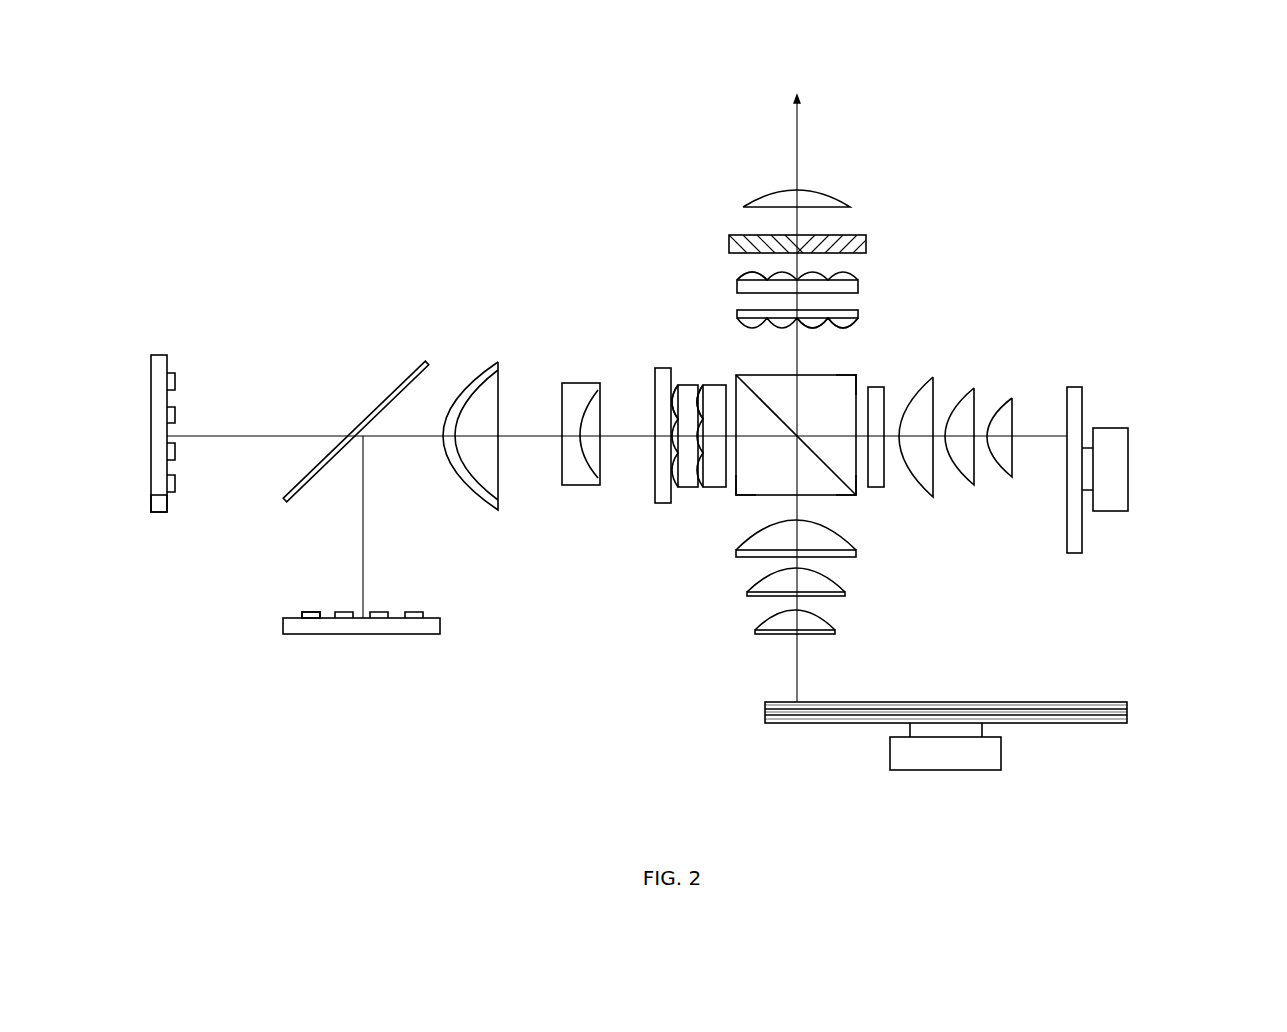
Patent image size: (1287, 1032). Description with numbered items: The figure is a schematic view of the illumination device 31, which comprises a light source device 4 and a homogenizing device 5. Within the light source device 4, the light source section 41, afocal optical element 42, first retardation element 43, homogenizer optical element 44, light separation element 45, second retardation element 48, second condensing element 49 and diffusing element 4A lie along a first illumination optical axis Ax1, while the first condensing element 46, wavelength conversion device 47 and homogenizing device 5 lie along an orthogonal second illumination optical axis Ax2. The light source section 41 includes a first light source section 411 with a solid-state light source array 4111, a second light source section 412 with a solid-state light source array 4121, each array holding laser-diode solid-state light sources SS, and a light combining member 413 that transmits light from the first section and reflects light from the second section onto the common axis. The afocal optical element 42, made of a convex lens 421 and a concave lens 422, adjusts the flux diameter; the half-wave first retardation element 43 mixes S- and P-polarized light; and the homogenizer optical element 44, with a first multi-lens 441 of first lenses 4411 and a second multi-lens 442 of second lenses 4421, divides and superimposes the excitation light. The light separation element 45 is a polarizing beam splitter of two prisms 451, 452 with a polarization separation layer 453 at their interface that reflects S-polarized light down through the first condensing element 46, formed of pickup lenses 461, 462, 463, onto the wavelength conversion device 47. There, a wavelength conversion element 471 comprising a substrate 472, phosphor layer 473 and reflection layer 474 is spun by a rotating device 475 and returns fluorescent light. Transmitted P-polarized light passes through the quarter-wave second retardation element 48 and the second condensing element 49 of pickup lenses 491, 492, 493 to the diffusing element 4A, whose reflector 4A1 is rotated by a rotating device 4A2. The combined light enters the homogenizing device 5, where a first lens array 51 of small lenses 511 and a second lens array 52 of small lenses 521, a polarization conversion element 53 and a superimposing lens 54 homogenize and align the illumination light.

The illumination device 31 is at (1072, 116).
The light source device 4 is at (199, 236).
The light source section 41 is at (222, 714).
The first light source section 411 is at (159, 355).
The solid-state light source array 4111 is at (159, 513).
The second light source section 412 is at (440, 628).
The solid-state light source array 4121 is at (283, 628).
The light combining member 413 is at (413, 370).
The afocal optical element 42 is at (521, 490).
The lens 421 is at (480, 512).
The lens 422 is at (583, 486).
The first retardation element 43 is at (660, 368).
The homogenizer optical element 44 is at (673, 446).
The first multi-lens 441 is at (688, 487).
The second multi-lens 442 is at (716, 487).
The first lens 4411 is at (684, 386).
The second lens 4421 is at (710, 386).
The light separation element 45 is at (838, 497).
The prism 451 is at (745, 497).
The prism 452 is at (856, 375).
The polarization separation layer 453 is at (856, 488).
The first condensing element 46 is at (798, 588).
The pickup lens 461 is at (858, 553).
The pickup lens 462 is at (846, 594).
The pickup lens 463 is at (836, 632).
The wavelength conversion device 47 is at (1013, 757).
The wavelength conversion element 471 is at (1209, 670).
The substrate 472 is at (1127, 719).
The phosphor layer 473 is at (1127, 705).
The reflection layer 474 is at (1127, 712).
The rotating device 475 is at (1001, 760).
The second retardation element 48 is at (877, 387).
The second condensing element 49 is at (962, 416).
The pickup lens 491 is at (925, 380).
The pickup lens 492 is at (968, 487).
The pickup lens 493 is at (1008, 398).
The diffusing element 4A is at (1099, 422).
The reflector 4A1 is at (1074, 387).
The rotating device 4A2 is at (1112, 428).
The homogenizing device 5 is at (827, 271).
The first lens array 51 is at (858, 314).
The small lens 511 is at (862, 328).
The second lens array 52 is at (858, 285).
The small lens 521 is at (740, 276).
The polarization conversion element 53 is at (866, 245).
The superimposing lens 54 is at (850, 205).
The first illumination optical axis Ax1 is at (262, 434).
The second illumination optical axis Ax2 is at (800, 122).
The solid-state light source SS is at (152, 410).